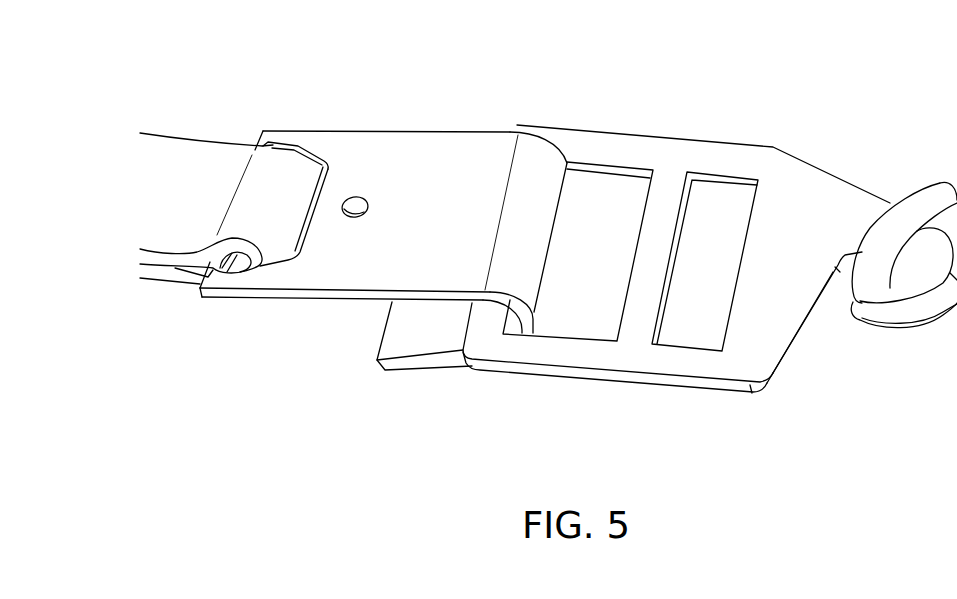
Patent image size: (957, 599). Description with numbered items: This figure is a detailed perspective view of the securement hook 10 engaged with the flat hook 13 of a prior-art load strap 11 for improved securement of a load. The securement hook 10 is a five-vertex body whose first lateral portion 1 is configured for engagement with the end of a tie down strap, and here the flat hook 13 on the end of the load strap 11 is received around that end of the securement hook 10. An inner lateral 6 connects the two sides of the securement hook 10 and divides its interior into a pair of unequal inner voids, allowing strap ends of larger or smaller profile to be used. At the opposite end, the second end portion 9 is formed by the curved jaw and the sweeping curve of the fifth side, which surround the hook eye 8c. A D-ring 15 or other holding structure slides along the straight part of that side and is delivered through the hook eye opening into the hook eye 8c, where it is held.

The first lateral portion 1 is at (492, 332).
The inner lateral 6 is at (655, 287).
The hook eye 8c is at (838, 297).
The second end portion 9 is at (803, 254).
The securement hook 10 is at (633, 284).
The load strap 11 is at (207, 153).
The flat hook 13 is at (442, 148).
The D-ring 15 is at (920, 202).